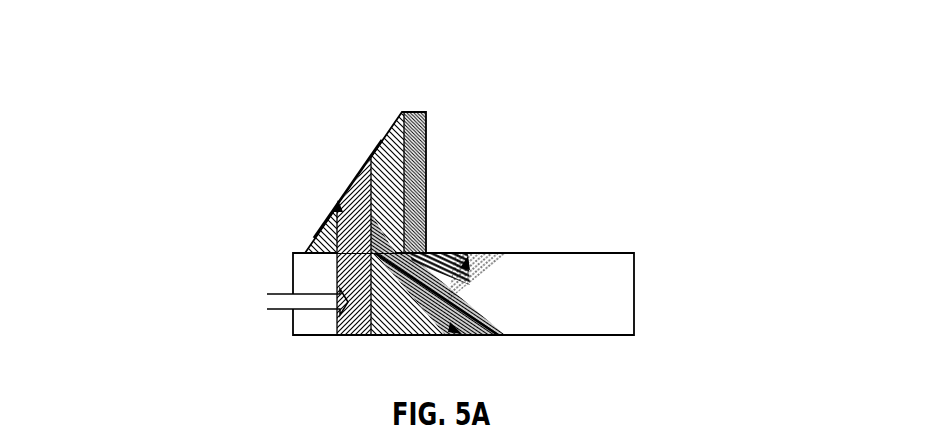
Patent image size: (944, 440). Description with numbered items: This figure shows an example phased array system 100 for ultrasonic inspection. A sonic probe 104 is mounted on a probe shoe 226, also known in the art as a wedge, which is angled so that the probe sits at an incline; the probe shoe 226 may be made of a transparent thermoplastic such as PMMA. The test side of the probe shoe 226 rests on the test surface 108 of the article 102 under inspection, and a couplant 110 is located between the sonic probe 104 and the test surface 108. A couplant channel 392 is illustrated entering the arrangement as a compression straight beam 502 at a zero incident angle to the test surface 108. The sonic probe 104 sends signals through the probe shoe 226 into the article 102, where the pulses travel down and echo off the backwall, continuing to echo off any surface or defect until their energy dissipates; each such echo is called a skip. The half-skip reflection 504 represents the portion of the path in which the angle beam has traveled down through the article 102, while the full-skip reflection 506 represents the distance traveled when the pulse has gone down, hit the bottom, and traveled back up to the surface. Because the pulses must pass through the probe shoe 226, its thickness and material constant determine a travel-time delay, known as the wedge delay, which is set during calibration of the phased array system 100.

The phased array system 100 is at (119, 53).
The probe shoe 226 is at (418, 112).
The sonic probe 104 is at (377, 142).
The article 102 is at (617, 253).
The test surface 108 is at (541, 253).
The couplant 110 is at (427, 252).
The compression straight beam 502 is at (334, 274).
The half-skip reflection 504 is at (430, 335).
The full-skip reflection 506 is at (503, 308).
The couplant channel 392 is at (267, 301).